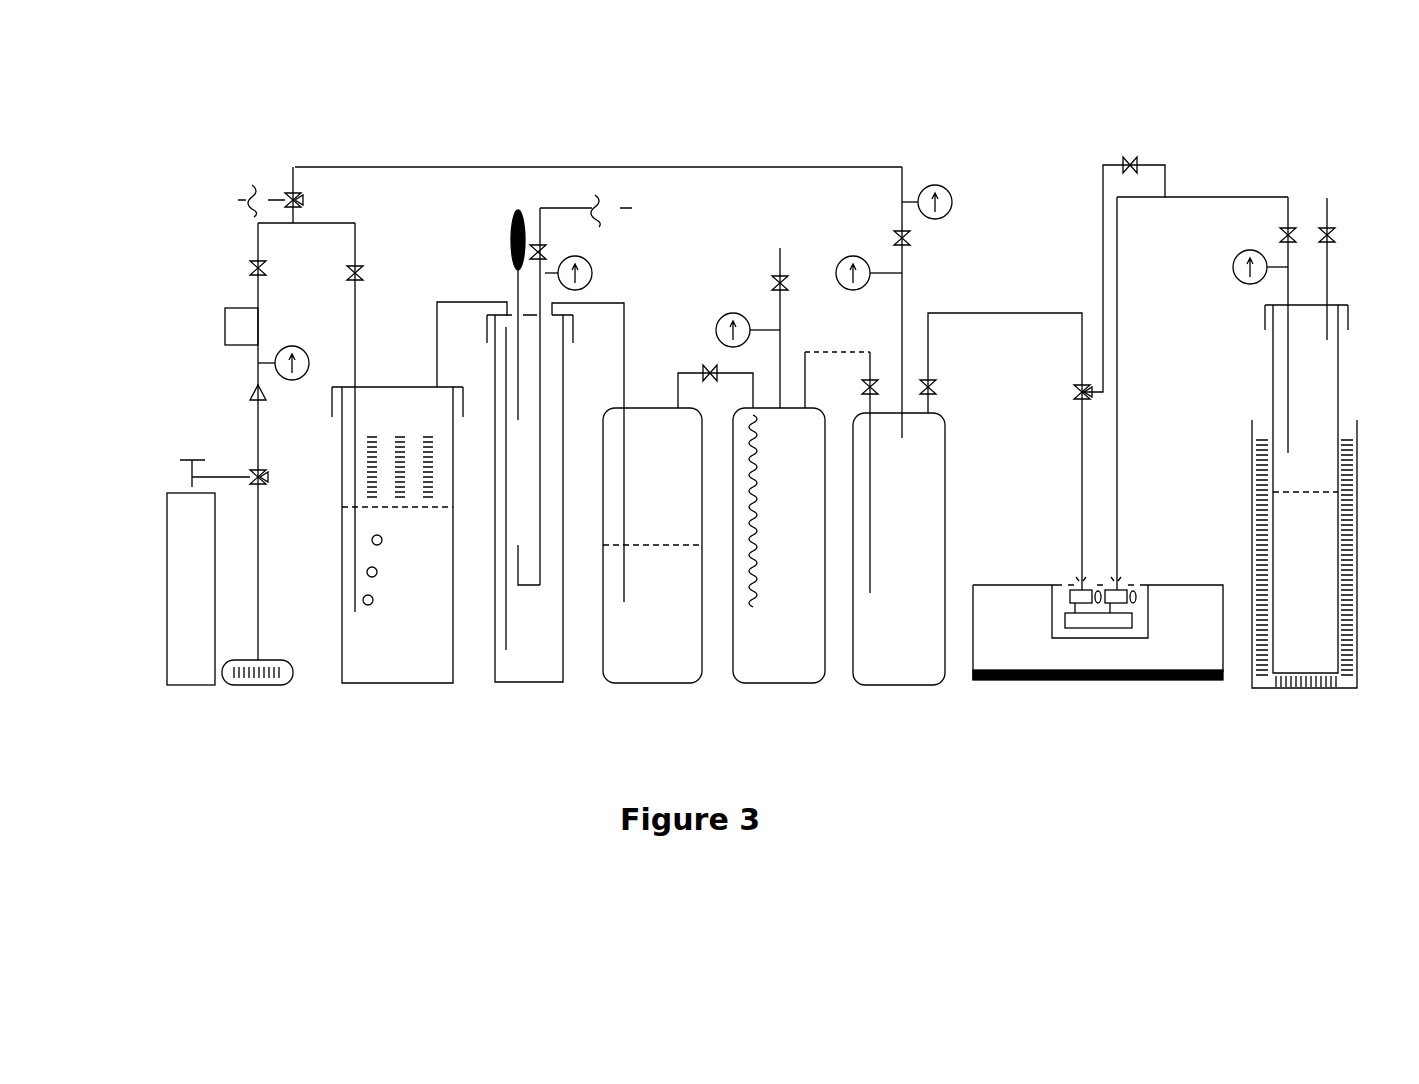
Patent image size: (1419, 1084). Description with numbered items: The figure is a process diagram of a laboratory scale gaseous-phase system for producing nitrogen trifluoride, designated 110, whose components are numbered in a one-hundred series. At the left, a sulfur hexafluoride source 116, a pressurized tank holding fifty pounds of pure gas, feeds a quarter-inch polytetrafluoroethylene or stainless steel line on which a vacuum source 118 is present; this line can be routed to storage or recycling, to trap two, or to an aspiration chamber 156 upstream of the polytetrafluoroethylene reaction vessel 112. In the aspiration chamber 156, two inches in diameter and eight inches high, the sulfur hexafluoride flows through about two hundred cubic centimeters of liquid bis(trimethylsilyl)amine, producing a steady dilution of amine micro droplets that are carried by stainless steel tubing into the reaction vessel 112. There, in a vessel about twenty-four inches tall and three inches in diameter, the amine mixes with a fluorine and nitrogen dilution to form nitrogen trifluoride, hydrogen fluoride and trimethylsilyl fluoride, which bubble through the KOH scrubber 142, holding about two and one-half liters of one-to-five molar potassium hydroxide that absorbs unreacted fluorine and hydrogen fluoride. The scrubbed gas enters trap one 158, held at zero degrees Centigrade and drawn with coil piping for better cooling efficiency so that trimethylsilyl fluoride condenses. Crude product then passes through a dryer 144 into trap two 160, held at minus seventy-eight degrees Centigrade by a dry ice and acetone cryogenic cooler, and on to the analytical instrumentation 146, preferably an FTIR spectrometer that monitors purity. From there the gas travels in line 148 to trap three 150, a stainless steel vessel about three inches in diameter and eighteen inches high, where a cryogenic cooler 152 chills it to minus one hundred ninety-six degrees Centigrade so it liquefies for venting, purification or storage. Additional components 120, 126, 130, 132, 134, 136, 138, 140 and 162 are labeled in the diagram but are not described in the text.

The laboratory scale version of the preferred embodiment 110 is at (1072, 792).
The polytetrafluoroethylene reaction vessel 112 is at (510, 657).
The SF6 source 116 is at (180, 642).
The vacuum source 118 is at (253, 687).
The check valve 120 is at (247, 389).
The valve 126 is at (265, 478).
The regulator 130 is at (218, 328).
The valve 132 is at (268, 272).
The valve 134 is at (365, 273).
The conduit 136 is at (432, 347).
The burner 138 is at (512, 238).
The valve 140 is at (708, 352).
The KOH scrubber 142 is at (622, 648).
The dryer 144 is at (823, 380).
The analytical instrumentation 146 is at (1020, 603).
The line 148 is at (1222, 197).
The trap 3 150 is at (1317, 527).
The cryogenic cooler 152 is at (1345, 660).
The aspiration chamber 156 is at (353, 660).
The trap 1 158 is at (763, 658).
The trap 2 160 is at (866, 660).
The coil 162 is at (762, 490).